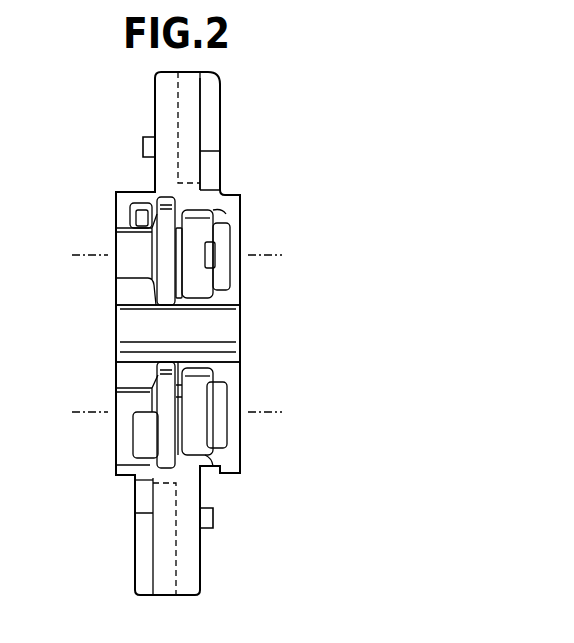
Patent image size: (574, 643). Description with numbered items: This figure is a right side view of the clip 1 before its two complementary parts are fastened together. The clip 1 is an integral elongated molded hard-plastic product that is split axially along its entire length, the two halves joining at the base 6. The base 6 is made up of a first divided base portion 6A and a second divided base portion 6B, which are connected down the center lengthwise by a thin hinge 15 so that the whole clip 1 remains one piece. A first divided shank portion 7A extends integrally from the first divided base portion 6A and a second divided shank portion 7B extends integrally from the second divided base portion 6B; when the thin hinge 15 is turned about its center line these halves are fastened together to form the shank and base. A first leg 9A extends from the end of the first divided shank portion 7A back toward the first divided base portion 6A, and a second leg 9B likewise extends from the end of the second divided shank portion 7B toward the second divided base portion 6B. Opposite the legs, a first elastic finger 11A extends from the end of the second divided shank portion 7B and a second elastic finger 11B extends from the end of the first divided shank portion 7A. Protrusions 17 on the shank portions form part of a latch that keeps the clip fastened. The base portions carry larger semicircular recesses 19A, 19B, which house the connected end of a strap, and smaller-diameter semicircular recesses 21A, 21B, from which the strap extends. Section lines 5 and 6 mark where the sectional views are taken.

The clip 1 is at (352, 133).
The section line 5 is at (72, 255).
The base 6 is at (72, 412).
The first divided base portion 6A is at (236, 272).
The second divided base portion 6B is at (236, 428).
The first divided shank portion 7A is at (168, 110).
The second divided shank portion 7B is at (187, 560).
The first leg 9A is at (188, 121).
The second leg 9B is at (165, 543).
The first elastic finger 11A is at (135, 565).
The second elastic finger 11B is at (213, 104).
The thin hinge 15 is at (230, 330).
The protrusion 17 is at (143, 150).
The semicircular recess 19A is at (217, 213).
The semicircular recess 19B is at (205, 465).
The semicircular recess 21A is at (128, 266).
The semicircular recess 21B is at (128, 423).